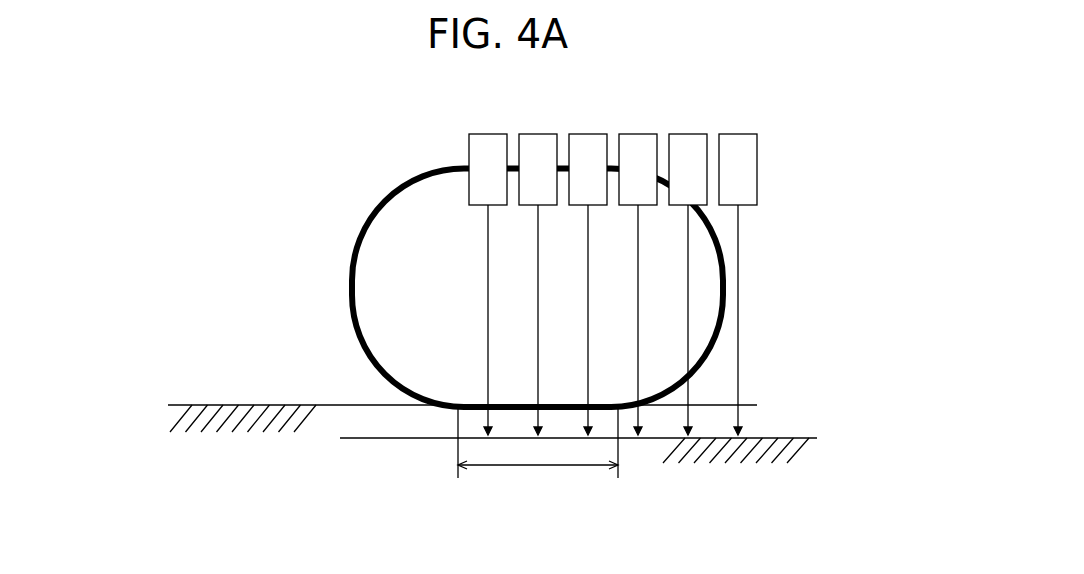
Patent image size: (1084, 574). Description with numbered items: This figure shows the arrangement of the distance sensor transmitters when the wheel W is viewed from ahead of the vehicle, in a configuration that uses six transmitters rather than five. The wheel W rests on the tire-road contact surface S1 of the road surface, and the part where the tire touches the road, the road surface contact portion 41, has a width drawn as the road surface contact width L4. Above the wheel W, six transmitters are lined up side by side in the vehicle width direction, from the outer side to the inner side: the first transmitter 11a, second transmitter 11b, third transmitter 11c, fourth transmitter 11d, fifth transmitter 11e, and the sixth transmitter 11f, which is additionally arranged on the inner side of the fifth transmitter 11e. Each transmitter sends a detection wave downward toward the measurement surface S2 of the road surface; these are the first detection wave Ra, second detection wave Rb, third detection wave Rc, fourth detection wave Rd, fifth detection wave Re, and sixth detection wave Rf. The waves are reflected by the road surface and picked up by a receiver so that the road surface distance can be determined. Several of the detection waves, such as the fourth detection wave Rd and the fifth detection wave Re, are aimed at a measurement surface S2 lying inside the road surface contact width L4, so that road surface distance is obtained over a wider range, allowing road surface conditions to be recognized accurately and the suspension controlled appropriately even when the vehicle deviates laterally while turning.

The first transmitter 11a is at (483, 133).
The second transmitter 11b is at (537, 133).
The third transmitter 11c is at (588, 133).
The fourth transmitter 11d is at (640, 133).
The fifth transmitter 11e is at (692, 133).
The sixth transmitter 11f is at (743, 133).
The wheel W is at (388, 198).
The first detection wave Ra is at (487, 238).
The second detection wave Rb is at (538, 288).
The third detection wave Rc is at (588, 338).
The fourth detection wave Rd is at (640, 248).
The fifth detection wave Re is at (690, 292).
The sixth detection wave Rf is at (738, 325).
The road surface contact portion 41 is at (472, 405).
The tire-road contact surface S1 is at (200, 405).
The measurement surface S2 is at (792, 438).
The road surface contact width L4 is at (539, 477).